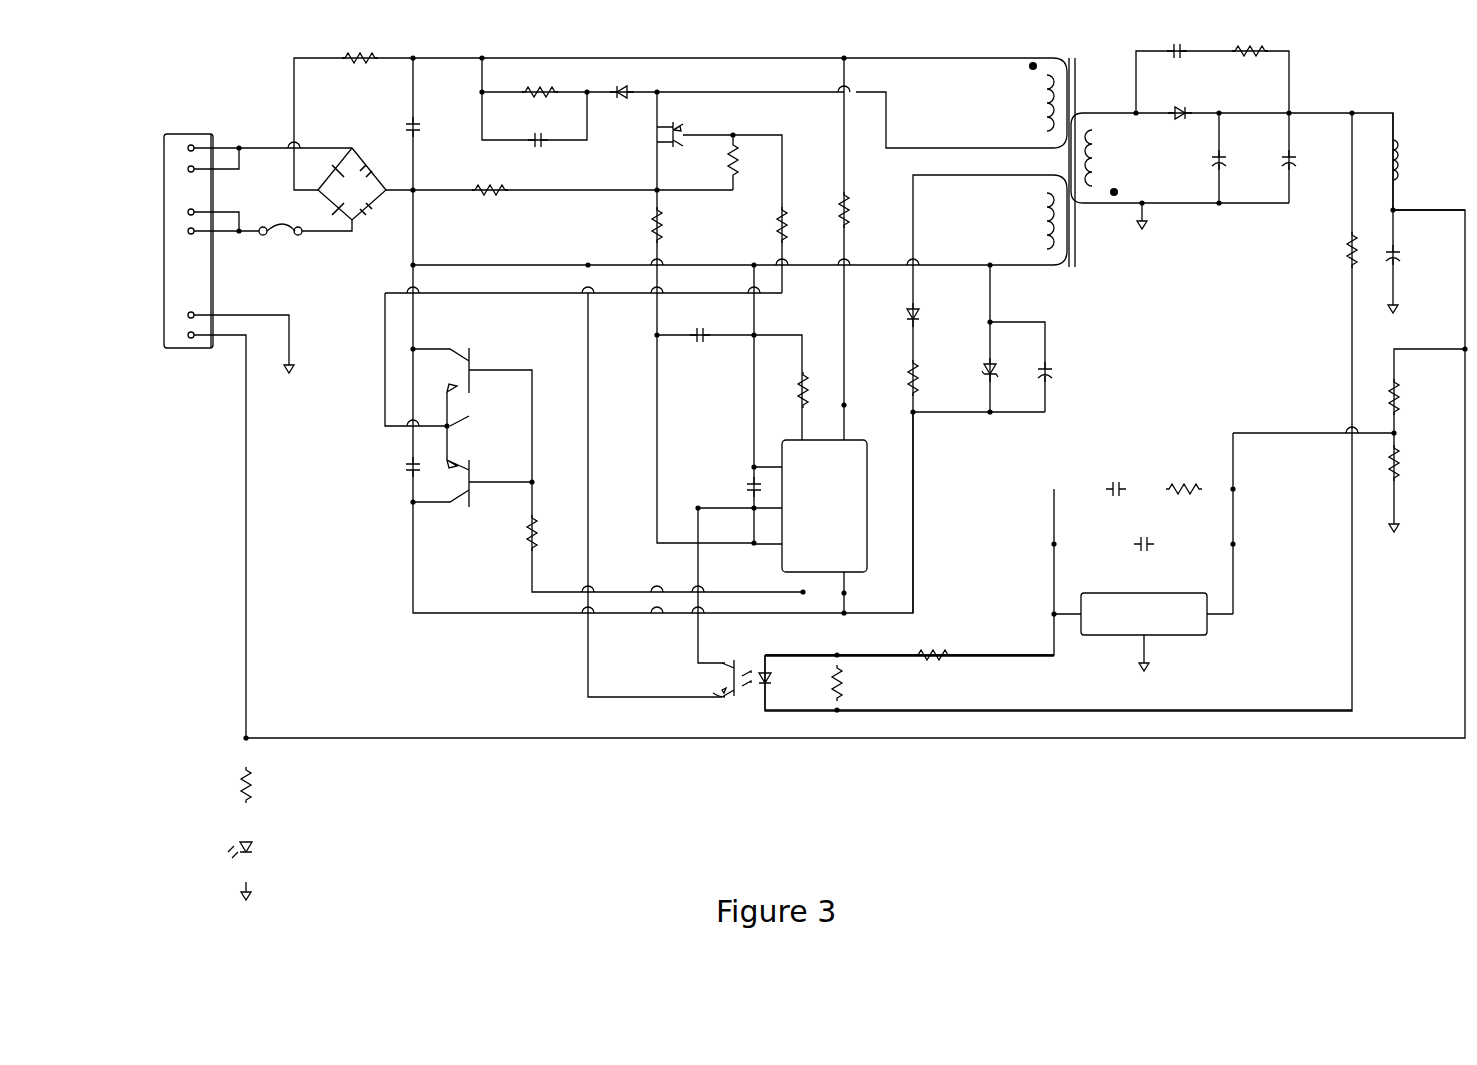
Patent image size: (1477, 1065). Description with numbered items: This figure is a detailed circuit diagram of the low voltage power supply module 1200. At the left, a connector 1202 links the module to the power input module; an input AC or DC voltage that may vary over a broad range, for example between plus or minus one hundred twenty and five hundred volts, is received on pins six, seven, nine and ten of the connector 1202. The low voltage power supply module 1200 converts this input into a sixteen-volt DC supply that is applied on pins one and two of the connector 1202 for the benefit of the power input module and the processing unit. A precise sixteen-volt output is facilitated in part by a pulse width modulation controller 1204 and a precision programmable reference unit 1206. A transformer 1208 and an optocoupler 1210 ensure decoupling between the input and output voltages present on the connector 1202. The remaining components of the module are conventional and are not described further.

The low voltage power supply module 1200 is at (1313, 46).
The connector 1202 is at (178, 130).
The pulse width modulation controller 1204 is at (818, 510).
The precision programmable reference unit 1206 is at (1154, 593).
The transformer 1208 is at (1070, 56).
The optocoupler 1210 is at (736, 660).